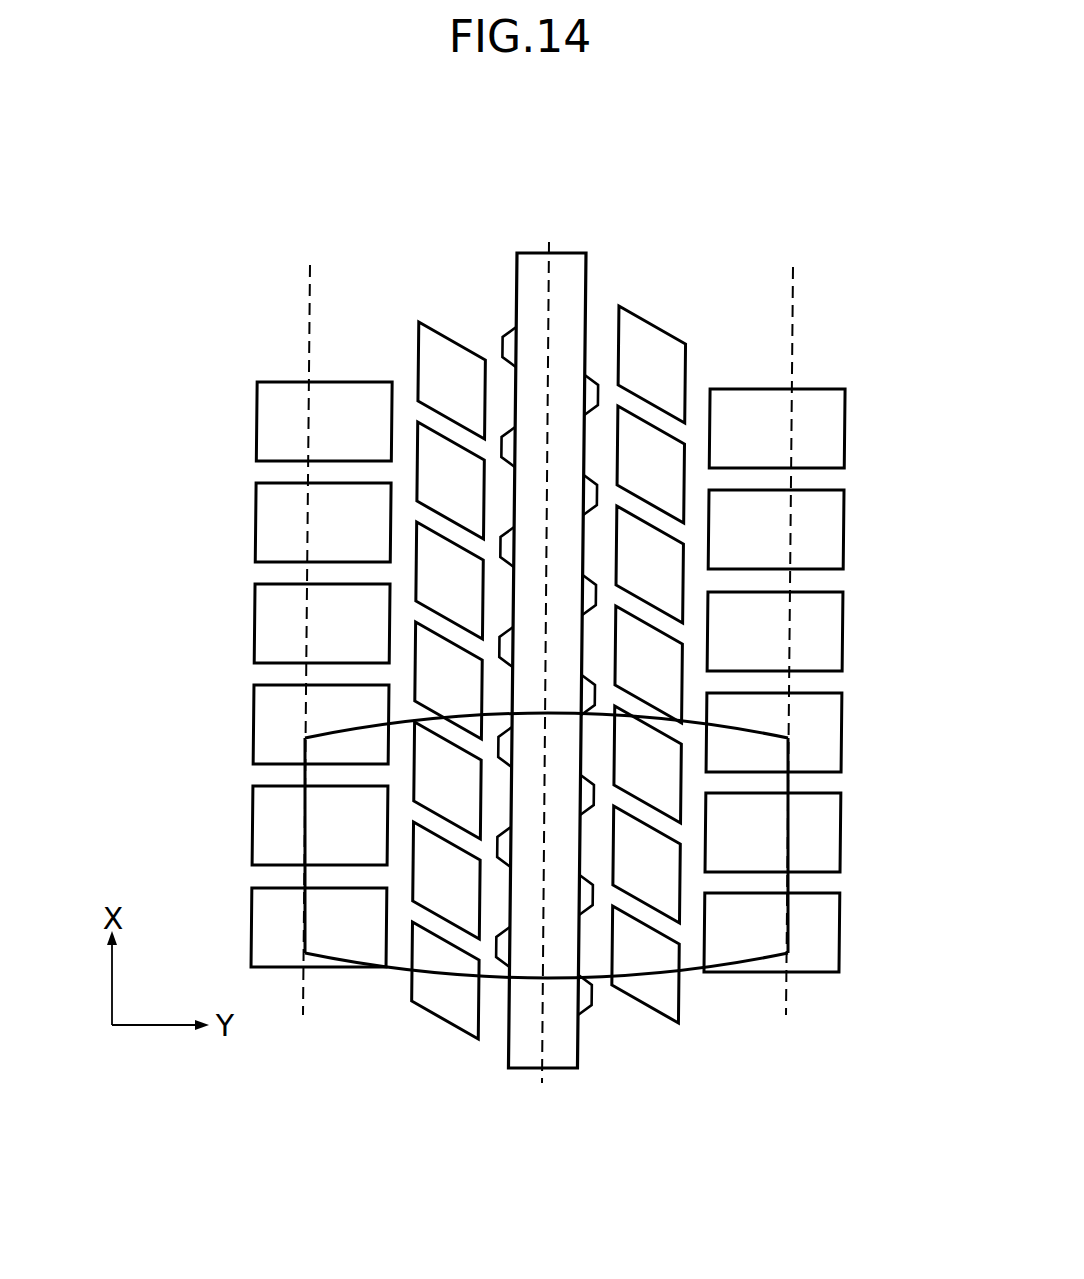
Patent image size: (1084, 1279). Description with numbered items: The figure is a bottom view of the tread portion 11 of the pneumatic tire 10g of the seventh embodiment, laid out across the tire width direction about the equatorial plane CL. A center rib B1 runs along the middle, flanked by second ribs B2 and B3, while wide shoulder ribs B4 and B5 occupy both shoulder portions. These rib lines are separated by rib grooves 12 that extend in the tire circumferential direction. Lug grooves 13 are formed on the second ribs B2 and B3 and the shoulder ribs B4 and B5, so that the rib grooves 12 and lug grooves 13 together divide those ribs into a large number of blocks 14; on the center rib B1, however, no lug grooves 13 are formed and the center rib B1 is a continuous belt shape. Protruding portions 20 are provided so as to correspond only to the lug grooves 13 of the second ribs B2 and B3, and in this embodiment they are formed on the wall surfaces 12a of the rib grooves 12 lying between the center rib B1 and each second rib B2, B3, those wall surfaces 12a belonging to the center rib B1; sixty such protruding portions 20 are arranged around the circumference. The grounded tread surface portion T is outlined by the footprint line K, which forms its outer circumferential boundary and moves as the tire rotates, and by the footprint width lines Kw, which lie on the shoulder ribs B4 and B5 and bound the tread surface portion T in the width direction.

The pneumatic tire 10g is at (490, 639).
The tread portion 11 is at (777, 428).
The rib groove 12 is at (557, 278).
The wall surface 12a is at (547, 524).
The lug groove 13 is at (541, 842).
The block 14 is at (542, 729).
The protruding portion 20 is at (545, 671).
The center rib B1 is at (547, 597).
The second rib B2 is at (448, 680).
The second rib B3 is at (648, 664).
The shoulder rib B4 is at (321, 674).
The shoulder rib B5 is at (774, 680).
The footprint line K is at (546, 915).
The footprint width line Kw is at (498, 604).
The equatorial plane CL is at (548, 681).
The tread surface portion T is at (813, 976).